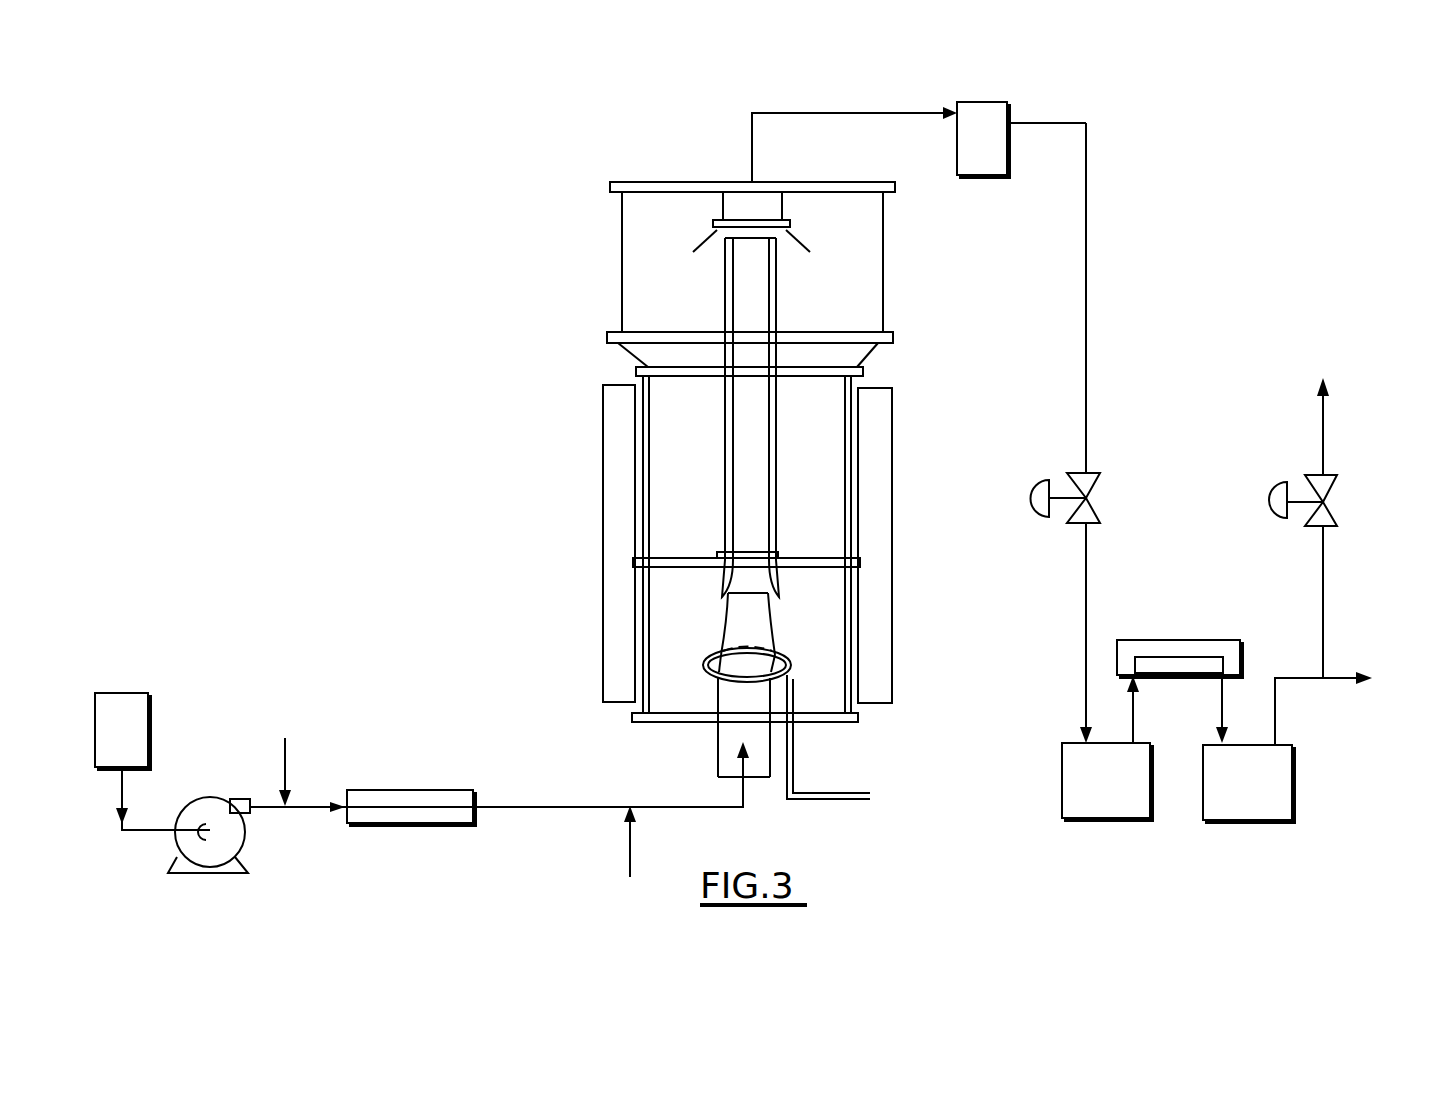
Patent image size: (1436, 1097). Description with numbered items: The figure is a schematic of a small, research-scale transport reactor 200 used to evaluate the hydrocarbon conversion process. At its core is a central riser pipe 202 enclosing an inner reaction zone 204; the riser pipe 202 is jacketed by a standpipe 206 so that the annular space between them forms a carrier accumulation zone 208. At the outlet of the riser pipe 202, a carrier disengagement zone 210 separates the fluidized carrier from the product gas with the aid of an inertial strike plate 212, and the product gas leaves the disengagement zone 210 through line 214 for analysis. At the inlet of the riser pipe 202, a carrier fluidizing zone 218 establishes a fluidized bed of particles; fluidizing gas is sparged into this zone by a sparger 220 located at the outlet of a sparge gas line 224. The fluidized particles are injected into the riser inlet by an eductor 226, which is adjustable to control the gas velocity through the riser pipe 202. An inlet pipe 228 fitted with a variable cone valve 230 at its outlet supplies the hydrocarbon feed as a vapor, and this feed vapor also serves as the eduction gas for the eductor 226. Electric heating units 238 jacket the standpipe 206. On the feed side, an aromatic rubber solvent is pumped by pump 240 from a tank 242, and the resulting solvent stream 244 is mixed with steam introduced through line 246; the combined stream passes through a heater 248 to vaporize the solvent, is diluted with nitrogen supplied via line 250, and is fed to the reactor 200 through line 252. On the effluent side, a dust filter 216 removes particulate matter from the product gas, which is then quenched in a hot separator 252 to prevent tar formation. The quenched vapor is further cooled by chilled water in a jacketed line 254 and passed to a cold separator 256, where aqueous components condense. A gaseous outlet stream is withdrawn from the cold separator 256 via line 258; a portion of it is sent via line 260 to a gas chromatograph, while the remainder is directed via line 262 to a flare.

The transport reactor 200 is at (545, 388).
The central riser pipe 202 is at (775, 475).
The inner reaction zone 204 is at (755, 458).
The standpipe 206 is at (852, 417).
The carrier accumulation zone 208 is at (818, 507).
The carrier disengagement zone 210 is at (857, 315).
The inertial strike plate 212 is at (775, 220).
The line 214 is at (752, 147).
The dust filter 216 is at (993, 178).
The carrier fluidizing zone 218 is at (822, 605).
The sparger 220 is at (790, 663).
The sparge gas line 224 is at (838, 793).
The eductor 226 is at (720, 577).
The inlet pipe 228 is at (718, 758).
The variable cone valve 230 is at (723, 610).
The electric heating units 238 is at (623, 486).
The pump 240 is at (193, 800).
The tank 242 is at (120, 693).
The solvent stream 244 is at (267, 807).
The line 246 is at (287, 753).
The heater 248 is at (400, 825).
The line 250 is at (628, 848).
The line / hot separator 252 is at (682, 807).
The jacketed line 254 is at (1138, 640).
The cold separator 256 is at (1275, 803).
The line 258 is at (1297, 672).
The line 260 is at (1335, 677).
The line 262 is at (1323, 585).